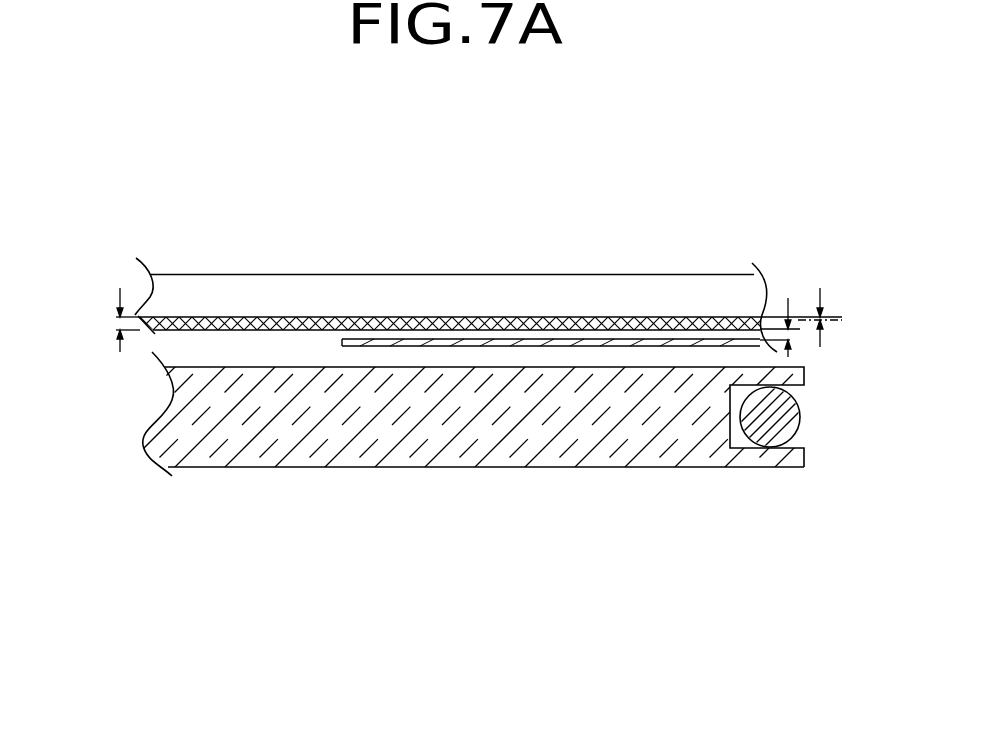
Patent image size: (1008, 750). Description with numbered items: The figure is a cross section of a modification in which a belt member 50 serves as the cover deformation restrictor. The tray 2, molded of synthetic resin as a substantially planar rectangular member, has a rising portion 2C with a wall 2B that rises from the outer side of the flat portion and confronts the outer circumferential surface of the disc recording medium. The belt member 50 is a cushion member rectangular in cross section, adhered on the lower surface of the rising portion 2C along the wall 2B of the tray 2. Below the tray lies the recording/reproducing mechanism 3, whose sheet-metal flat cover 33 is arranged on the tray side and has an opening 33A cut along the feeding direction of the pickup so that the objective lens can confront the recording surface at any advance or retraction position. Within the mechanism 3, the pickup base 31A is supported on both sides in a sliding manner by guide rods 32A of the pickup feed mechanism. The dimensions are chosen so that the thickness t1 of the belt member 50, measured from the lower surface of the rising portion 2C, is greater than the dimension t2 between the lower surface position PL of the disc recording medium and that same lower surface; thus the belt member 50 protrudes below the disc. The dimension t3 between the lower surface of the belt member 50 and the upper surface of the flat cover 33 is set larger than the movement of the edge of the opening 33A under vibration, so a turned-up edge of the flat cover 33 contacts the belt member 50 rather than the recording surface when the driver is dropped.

The tray 2 is at (203, 232).
The wall 2B is at (466, 284).
The rising portion 2C is at (706, 262).
The belt member 50 is at (567, 316).
The recording/reproducing mechanism 3 is at (228, 483).
The flat cover 33 is at (425, 347).
The opening 33A is at (343, 343).
The base 31A is at (513, 468).
The guide rods 32A is at (771, 440).
The thickness of the cover deformation restrictor t1 is at (117, 323).
The dimension between disc lower surface position and rising portion lower surface t2 is at (806, 316).
The dimension between restrictor lower surface and flat cover upper surface t3 is at (795, 329).
The lower surface position of the disc recording medium PL is at (835, 318).